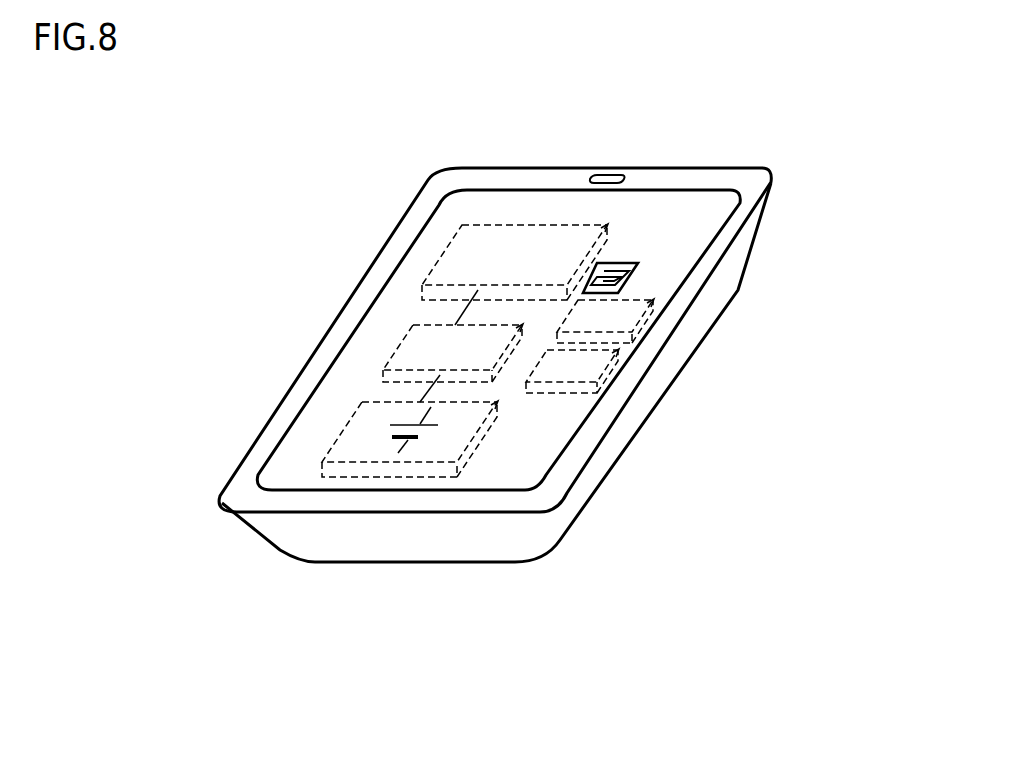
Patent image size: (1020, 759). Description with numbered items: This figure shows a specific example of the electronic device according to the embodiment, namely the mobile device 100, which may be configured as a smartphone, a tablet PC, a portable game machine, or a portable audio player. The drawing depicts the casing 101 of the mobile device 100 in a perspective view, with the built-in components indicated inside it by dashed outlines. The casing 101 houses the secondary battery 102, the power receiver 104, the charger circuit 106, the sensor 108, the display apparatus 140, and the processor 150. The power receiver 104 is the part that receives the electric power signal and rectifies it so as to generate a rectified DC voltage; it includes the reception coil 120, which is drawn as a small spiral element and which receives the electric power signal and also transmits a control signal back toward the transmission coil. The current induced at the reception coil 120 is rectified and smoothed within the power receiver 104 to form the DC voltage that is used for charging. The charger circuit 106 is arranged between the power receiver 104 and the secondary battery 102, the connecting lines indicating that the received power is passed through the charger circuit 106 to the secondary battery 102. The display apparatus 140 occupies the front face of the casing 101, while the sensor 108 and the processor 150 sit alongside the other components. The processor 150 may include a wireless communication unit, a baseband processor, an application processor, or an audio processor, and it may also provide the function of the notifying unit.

The mobile device 100 is at (473, 714).
The casing 101 is at (575, 503).
The secondary battery 102 is at (345, 468).
The power receiver 104 is at (467, 262).
The charger circuit 106 is at (418, 357).
The sensor 108 is at (618, 317).
The reception coil 120 is at (632, 270).
The display apparatus 140 is at (692, 207).
The processor 150 is at (585, 365).